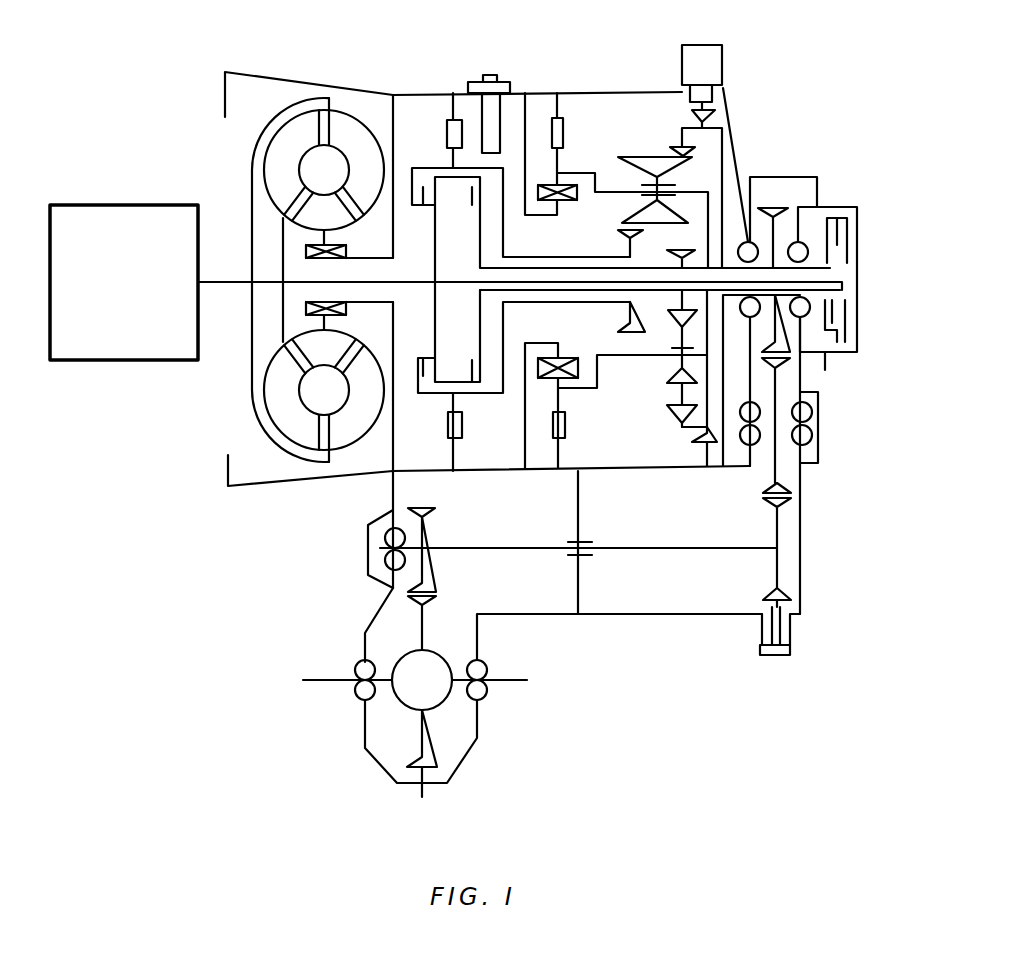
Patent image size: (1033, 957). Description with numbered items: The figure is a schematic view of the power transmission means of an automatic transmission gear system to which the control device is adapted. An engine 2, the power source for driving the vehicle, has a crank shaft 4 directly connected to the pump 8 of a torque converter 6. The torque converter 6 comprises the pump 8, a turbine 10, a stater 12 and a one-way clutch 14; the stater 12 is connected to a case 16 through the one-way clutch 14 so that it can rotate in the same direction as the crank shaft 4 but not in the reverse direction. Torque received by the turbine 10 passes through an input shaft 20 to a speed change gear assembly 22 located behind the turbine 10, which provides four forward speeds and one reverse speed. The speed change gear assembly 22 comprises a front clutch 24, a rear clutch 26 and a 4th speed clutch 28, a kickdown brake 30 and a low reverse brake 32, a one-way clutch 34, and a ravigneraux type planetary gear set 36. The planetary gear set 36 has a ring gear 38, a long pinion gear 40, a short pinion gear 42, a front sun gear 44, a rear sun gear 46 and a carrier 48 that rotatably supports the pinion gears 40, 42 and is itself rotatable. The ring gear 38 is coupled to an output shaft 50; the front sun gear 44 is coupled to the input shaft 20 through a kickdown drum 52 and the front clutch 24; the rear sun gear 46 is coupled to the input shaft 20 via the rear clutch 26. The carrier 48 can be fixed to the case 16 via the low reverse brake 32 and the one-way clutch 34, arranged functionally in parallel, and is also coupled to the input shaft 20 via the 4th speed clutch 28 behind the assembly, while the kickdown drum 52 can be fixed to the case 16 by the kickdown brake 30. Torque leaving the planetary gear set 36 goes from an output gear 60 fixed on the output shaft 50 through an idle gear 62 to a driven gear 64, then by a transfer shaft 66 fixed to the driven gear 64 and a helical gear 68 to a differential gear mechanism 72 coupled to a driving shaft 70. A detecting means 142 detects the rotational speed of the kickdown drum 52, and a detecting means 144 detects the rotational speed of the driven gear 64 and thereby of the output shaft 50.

The engine 2 is at (131, 304).
The crank shaft 4 is at (229, 284).
The torque converter 6 is at (290, 99).
The pump 8 is at (348, 135).
The turbine 10 is at (288, 153).
The stater 12 is at (300, 222).
The one-way clutch 14 is at (306, 252).
The case 16 is at (550, 92).
The input shaft 20 is at (302, 283).
The speed change gear assembly 22 is at (600, 88).
The front clutch 24 is at (415, 394).
The rear clutch 26 is at (478, 394).
The 4th speed clutch 28 is at (840, 226).
The kickdown brake 30 is at (462, 437).
The low reverse brake 32 is at (555, 438).
The one-way clutch 34 is at (575, 384).
The ravigneraux type planetary gear set 36 is at (619, 179).
The ring gear 38 is at (677, 147).
The long pinion gear 40 is at (657, 156).
The short pinion gear 42 is at (675, 380).
The front sun gear 44 is at (627, 323).
The rear sun gear 46 is at (680, 318).
The carrier 48 is at (700, 190).
The output shaft 50 is at (818, 205).
The kickdown drum 52 is at (467, 167).
The output gear 60 is at (773, 208).
The idle gear 62 is at (780, 365).
The driven gear 64 is at (788, 503).
The transfer shaft 66 is at (688, 547).
The helical gear 68 is at (428, 576).
The driving shaft 70 is at (333, 680).
The differential gear mechanism 72 is at (407, 698).
The detecting means 142 is at (490, 76).
The detecting means 144 is at (770, 655).